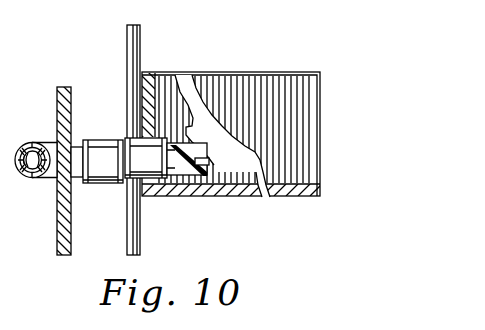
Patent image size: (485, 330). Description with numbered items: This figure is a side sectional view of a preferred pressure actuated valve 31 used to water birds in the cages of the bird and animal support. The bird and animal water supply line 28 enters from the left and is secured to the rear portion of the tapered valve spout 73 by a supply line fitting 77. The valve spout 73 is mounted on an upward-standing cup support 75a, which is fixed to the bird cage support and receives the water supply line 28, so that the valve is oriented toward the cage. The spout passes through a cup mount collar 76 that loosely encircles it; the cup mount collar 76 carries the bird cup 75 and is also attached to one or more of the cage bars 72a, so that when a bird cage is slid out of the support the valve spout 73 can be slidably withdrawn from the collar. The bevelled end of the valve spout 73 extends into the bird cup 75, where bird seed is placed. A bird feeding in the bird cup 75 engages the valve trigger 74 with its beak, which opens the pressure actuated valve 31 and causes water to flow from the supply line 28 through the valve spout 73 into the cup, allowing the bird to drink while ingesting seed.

The bird and animal water supply line 28 is at (32, 143).
The pressure actuated valve 31 is at (189, 134).
The cage bar 72a is at (127, 58).
The valve spout 73 is at (213, 168).
The valve trigger 74 is at (216, 128).
The bird cup 75 is at (272, 195).
The cup support 75a is at (57, 198).
The cup mount collar 76 is at (148, 193).
The supply line fitting 77 is at (102, 185).